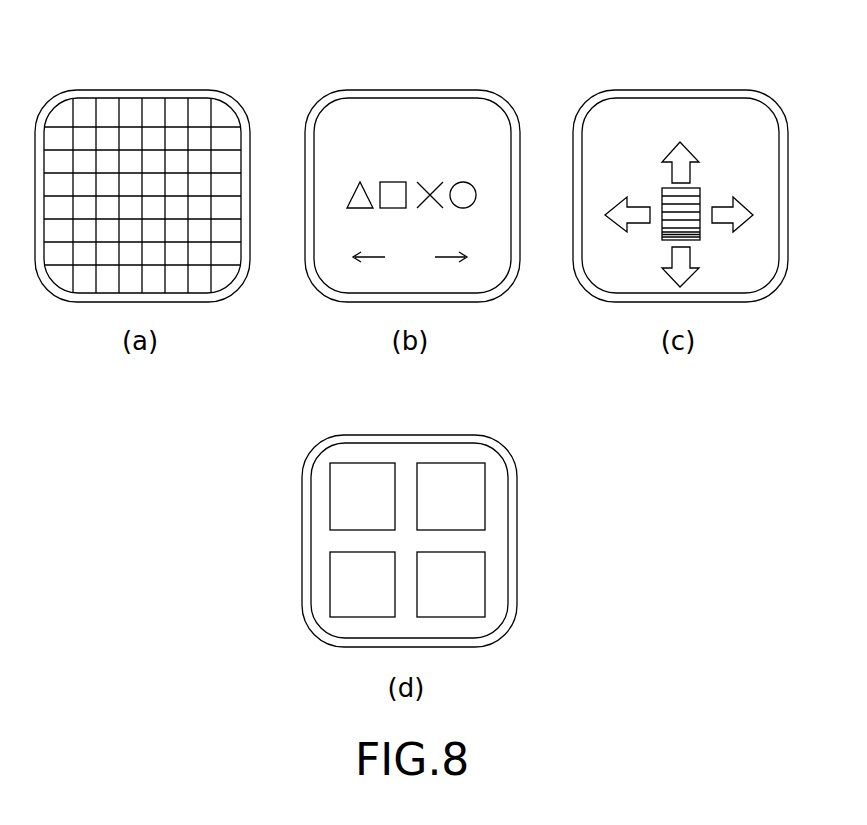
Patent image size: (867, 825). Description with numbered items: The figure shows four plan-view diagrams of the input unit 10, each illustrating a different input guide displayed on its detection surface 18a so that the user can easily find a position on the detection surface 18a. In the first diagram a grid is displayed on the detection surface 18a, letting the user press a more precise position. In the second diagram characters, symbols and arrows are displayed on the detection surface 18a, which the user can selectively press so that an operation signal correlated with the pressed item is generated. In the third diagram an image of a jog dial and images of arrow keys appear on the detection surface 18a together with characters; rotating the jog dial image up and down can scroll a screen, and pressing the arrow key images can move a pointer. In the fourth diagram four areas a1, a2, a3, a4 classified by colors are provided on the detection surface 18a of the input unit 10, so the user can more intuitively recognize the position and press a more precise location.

The input unit 10 is at (148, 0).
The detection surface 18a is at (57, 17).
The area a1 is at (362, 496).
The area a2 is at (451, 496).
The area a3 is at (362, 584).
The area a4 is at (451, 584).